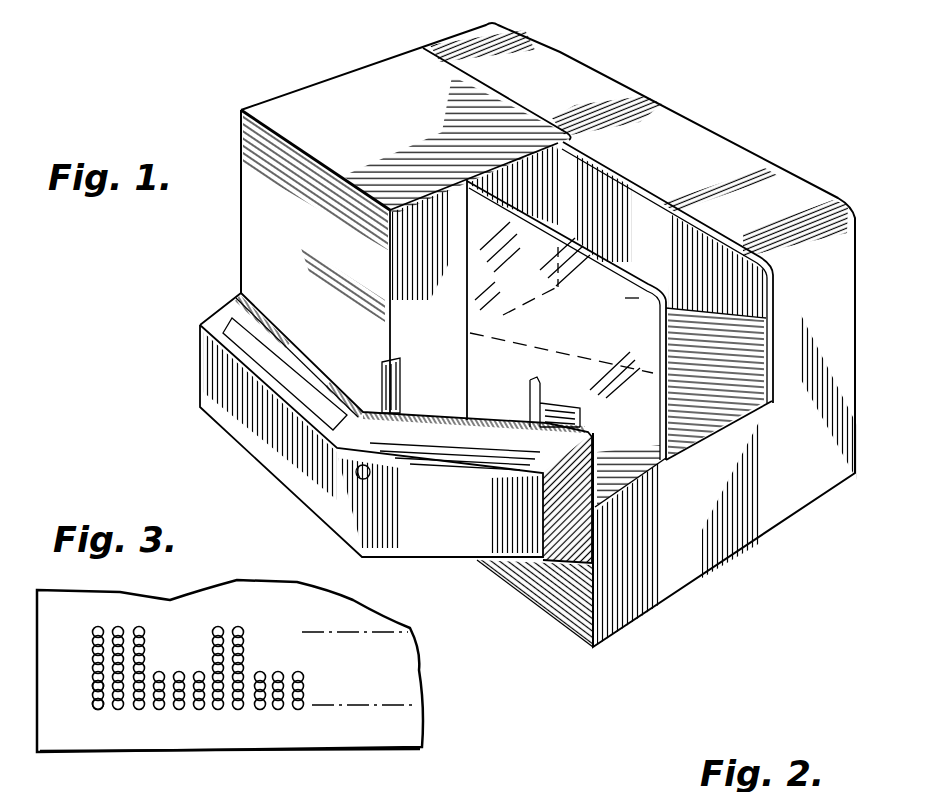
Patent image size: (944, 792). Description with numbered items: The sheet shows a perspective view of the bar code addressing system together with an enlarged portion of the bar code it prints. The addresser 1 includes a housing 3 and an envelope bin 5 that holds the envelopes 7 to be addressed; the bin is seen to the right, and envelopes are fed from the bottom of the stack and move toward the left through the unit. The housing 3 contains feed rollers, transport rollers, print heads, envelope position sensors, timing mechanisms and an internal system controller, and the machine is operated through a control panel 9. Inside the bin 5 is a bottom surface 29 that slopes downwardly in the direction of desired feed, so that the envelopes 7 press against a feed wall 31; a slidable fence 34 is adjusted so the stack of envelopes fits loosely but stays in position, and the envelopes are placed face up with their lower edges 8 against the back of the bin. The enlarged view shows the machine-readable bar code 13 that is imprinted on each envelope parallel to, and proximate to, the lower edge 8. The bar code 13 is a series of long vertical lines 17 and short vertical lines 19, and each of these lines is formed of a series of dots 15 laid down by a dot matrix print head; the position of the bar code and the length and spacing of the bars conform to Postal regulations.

In FIG. 1, the addresser 1 is at (340, 74).
In FIG. 1, the housing 3 is at (257, 235).
In FIG. 1, the envelope bin 5 is at (634, 197).
In FIG. 1, the feed wall 31 is at (544, 209).
In FIG. 1, the lower edge 8 is at (732, 307).
In FIG. 1, the slidable fence 34 is at (641, 425).
In FIG. 1, the envelopes 7 is at (753, 422).
In FIG. 3, the envelopes 7 is at (108, 742).
In FIG. 1, the bottom surface 29 is at (693, 452).
In FIG. 1, the control panel 9 is at (237, 325).
In FIG. 3, the bar code 13 is at (405, 673).
In FIG. 3, the dots 15 is at (97, 704).
In FIG. 3, the long vertical lines 17 is at (139, 626).
In FIG. 3, the short vertical lines 19 is at (198, 672).